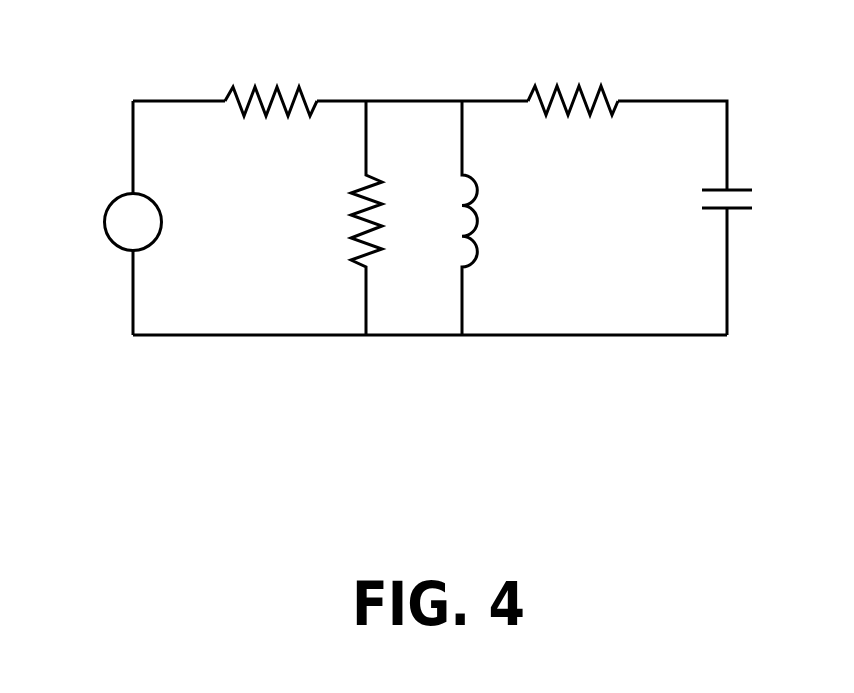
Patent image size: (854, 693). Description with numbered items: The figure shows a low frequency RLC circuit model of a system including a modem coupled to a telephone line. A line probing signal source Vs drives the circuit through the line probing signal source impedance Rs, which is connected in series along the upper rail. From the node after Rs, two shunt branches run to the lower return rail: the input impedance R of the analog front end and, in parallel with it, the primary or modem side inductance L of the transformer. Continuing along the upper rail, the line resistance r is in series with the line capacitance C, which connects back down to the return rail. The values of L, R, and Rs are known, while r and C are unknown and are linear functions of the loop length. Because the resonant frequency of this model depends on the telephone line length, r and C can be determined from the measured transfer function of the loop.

The line probing signal source Vs is at (99, 222).
The line probing signal source impedance Rs is at (271, 79).
The input impedance of the analog front end R is at (348, 218).
The primary or modem side inductance of the transformer L is at (488, 218).
The line resistance r is at (573, 79).
The line capacitance C is at (746, 200).